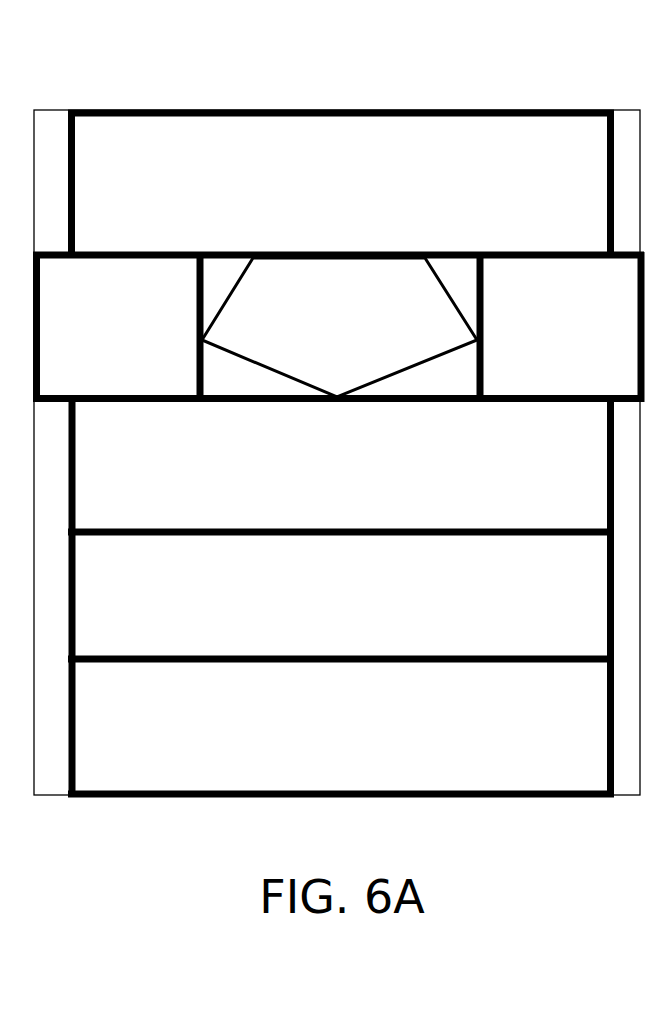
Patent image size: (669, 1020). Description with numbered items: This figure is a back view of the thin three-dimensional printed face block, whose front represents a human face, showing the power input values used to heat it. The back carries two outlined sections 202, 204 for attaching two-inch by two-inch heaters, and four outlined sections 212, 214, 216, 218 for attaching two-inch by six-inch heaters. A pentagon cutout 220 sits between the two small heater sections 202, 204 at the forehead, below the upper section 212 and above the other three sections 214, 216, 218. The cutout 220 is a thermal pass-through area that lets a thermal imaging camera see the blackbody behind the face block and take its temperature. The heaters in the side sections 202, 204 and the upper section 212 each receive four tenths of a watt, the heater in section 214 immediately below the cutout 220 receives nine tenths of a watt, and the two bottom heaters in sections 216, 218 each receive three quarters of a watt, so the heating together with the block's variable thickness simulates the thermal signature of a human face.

The heater outlined section 202 is at (165, 285).
The heater outlined section 204 is at (523, 280).
The heater outlined section 212 is at (428, 128).
The heater outlined section 214 is at (193, 498).
The heater outlined section 216 is at (303, 628).
The heater outlined section 218 is at (540, 765).
The pentagon cutout 220 is at (287, 275).